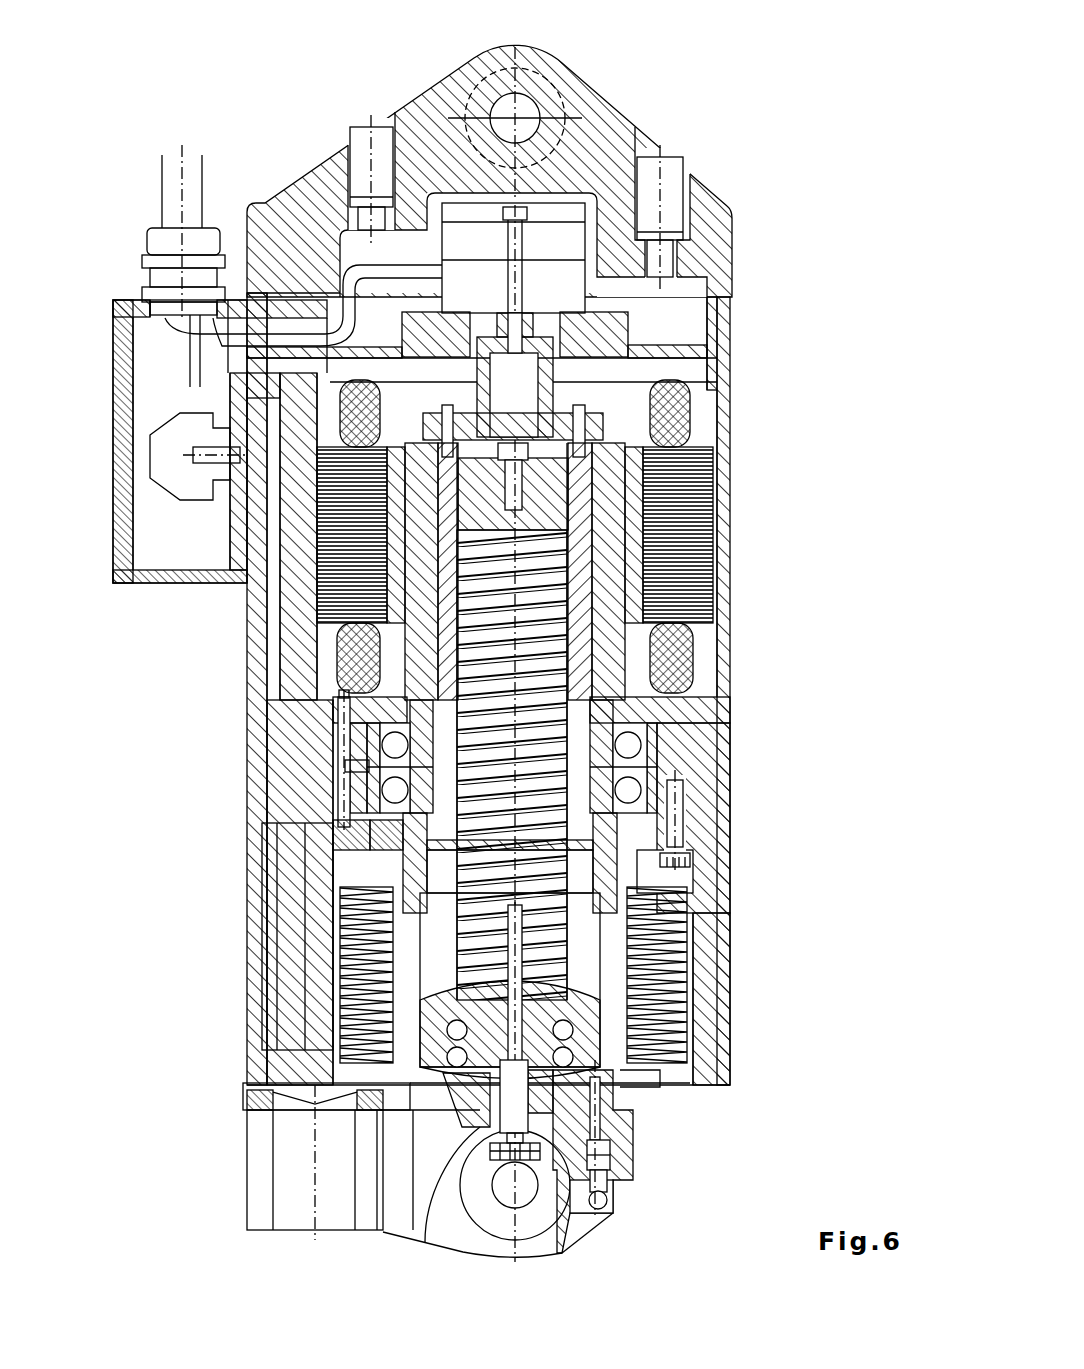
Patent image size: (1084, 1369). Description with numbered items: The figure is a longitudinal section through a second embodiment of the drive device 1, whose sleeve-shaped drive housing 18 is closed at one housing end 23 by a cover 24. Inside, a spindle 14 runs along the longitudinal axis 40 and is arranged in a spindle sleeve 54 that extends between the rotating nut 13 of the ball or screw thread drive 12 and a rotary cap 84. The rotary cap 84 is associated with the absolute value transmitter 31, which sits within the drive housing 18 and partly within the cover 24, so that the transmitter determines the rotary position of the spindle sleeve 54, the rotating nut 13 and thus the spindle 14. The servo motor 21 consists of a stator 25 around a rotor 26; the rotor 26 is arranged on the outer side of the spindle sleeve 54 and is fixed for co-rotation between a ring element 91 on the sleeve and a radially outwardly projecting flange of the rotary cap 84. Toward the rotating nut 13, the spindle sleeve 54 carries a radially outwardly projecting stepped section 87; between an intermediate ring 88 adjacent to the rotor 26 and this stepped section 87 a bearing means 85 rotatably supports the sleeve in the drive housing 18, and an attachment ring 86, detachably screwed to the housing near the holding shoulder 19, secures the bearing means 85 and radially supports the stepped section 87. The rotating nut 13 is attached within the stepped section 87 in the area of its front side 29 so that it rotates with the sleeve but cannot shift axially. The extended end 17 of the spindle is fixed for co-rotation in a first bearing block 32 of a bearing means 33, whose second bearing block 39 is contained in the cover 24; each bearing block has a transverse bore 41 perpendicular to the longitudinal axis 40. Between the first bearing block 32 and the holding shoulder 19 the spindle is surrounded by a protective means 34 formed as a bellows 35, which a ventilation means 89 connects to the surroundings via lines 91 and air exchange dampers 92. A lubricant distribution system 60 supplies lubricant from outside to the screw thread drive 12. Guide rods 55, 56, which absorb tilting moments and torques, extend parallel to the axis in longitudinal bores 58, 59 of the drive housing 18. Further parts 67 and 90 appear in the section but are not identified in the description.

The drive device 1 is at (469, 668).
The ball thread drive 12 is at (397, 928).
The rotating nut 13 is at (677, 1013).
The spindle 14 is at (600, 953).
The extended end 17 is at (422, 1225).
The drive housing 18 is at (730, 800).
The holding shoulder 19 is at (655, 712).
The servo motor 21 is at (536, 508).
The housing end 23 is at (730, 437).
The cover 24 is at (502, 168).
The stator 25 is at (714, 495).
The rotor 26 is at (665, 585).
The front side 29 is at (690, 885).
The absolute value transmitter 31 is at (557, 283).
The first bearing block 32 is at (386, 1258).
The bearing means 33 is at (342, 113).
The protective means 34 is at (673, 1112).
The bellows 35 is at (580, 983).
The second bearing block 39 is at (238, 176).
The longitudinal axis 40 is at (650, 738).
The transverse bore 41 is at (531, 100).
The spindle sleeve 54 is at (688, 655).
The guide rod 55 is at (325, 1192).
The guide rod 56 is at (300, 1222).
The longitudinal bore 58 is at (241, 760).
The longitudinal bore 59 is at (333, 703).
The lubricant distribution system 60 is at (618, 1229).
The intermediate plate 67 is at (730, 348).
The rotary cap 84 is at (545, 378).
The bearing means 85 is at (312, 777).
The attachment ring 86 is at (330, 838).
The stepped section 87 is at (345, 862).
The intermediate ring 88 is at (350, 668).
The ventilation means 89 is at (683, 132).
The set screw 90 is at (690, 830).
The ring element 91 is at (410, 738).
The air exchange damper 92 is at (662, 183).